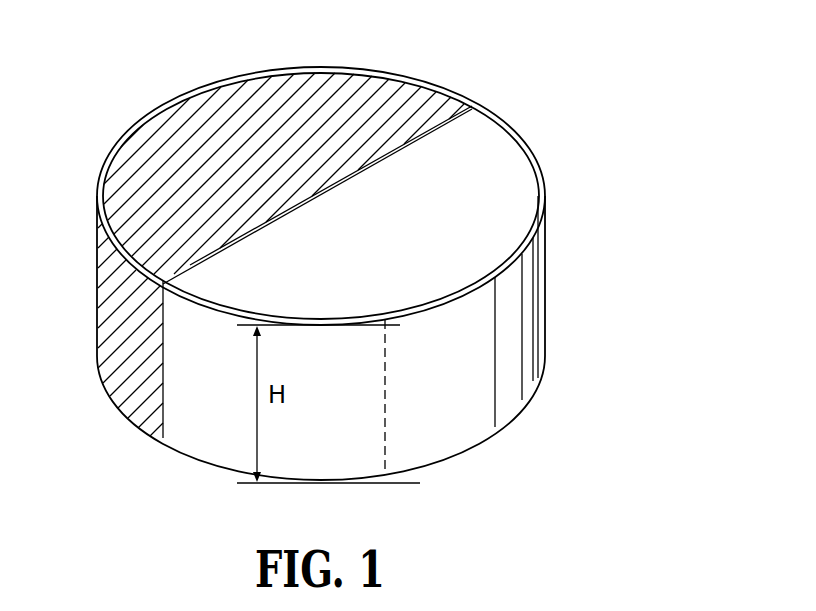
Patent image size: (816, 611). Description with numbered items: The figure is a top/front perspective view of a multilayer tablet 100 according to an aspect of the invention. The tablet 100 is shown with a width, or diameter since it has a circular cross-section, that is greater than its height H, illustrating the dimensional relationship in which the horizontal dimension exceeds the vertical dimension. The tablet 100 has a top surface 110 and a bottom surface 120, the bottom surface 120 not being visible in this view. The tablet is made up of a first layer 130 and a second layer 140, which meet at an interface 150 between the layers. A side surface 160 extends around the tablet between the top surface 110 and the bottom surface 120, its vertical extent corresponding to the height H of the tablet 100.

The multilayer tablet 100 is at (496, 47).
The top surface 110 is at (299, 122).
The bottom surface 120 is at (317, 503).
The first layer 130 is at (192, 180).
The second layer 140 is at (468, 205).
The interface 150 is at (309, 211).
The side surface 160 is at (507, 353).